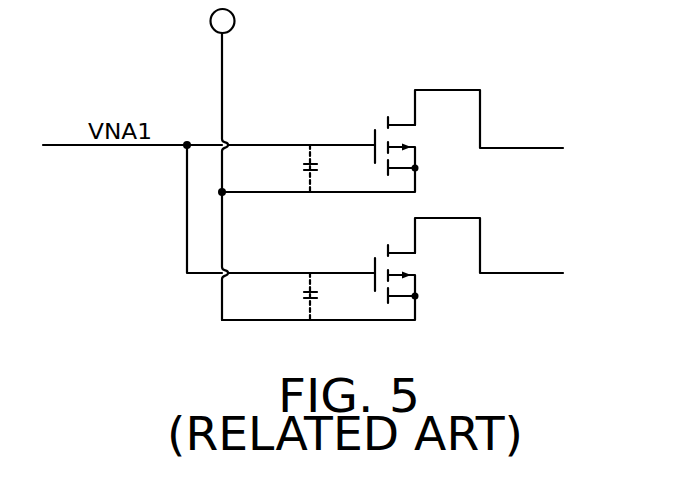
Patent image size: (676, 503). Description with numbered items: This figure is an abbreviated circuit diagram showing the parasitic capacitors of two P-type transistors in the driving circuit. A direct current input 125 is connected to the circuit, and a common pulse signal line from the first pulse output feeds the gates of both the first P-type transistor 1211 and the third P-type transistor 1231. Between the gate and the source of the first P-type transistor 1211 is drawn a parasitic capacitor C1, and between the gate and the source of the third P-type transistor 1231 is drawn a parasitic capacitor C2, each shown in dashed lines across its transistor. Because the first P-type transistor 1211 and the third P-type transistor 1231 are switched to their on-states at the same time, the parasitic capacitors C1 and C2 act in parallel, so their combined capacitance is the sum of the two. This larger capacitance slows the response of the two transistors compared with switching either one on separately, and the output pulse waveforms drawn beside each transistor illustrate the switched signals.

The direct current input 125 is at (226, 22).
The first P-type transistor 1211 is at (458, 115).
The third P-type transistor 1231 is at (457, 243).
The parasitic capacitor C1 is at (326, 168).
The parasitic capacitor C2 is at (326, 296).